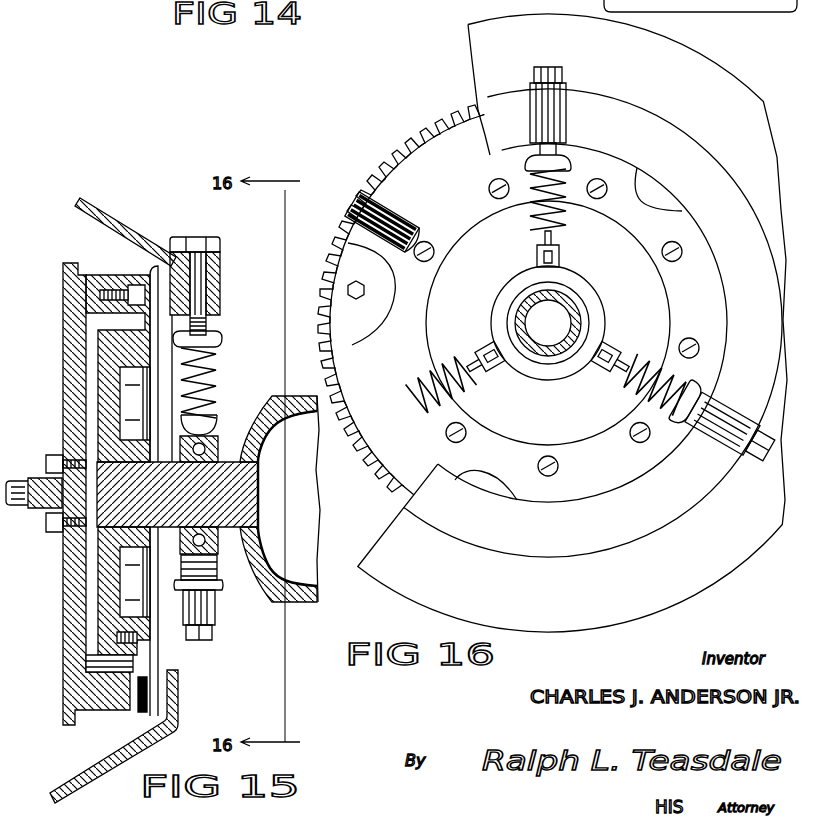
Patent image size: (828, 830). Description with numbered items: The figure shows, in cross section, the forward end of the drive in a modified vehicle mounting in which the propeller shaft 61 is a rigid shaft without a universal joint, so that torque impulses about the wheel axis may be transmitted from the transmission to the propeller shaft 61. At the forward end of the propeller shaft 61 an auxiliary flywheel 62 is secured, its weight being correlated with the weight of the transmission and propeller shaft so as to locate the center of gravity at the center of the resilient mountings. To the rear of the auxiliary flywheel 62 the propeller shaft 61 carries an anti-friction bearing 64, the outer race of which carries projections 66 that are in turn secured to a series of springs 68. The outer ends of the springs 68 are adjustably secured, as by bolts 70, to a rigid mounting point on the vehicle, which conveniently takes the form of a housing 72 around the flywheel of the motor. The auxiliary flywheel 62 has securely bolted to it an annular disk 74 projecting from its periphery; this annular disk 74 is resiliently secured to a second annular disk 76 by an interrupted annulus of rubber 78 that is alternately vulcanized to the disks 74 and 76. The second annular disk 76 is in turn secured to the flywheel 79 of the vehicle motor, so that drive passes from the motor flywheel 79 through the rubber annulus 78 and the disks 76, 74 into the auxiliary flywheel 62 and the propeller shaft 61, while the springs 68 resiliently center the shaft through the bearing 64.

In FIG. 15, the propeller shaft 61 is at (305, 497).
In FIG. 16, the propeller shaft 61 is at (575, 311).
In FIG. 15, the auxiliary flywheel 62 is at (105, 345).
In FIG. 15, the anti-friction bearing 64 is at (218, 438).
In FIG. 16, the anti-friction bearing 64 is at (566, 372).
In FIG. 15, the projections 66 is at (216, 414).
In FIG. 16, the projections 66 is at (493, 368).
In FIG. 15, the springs 68 is at (216, 380).
In FIG. 16, the springs 68 is at (444, 370).
In FIG. 15, the bolts 70 is at (220, 244).
In FIG. 16, the bolts 70 is at (566, 80).
In FIG. 15, the housing 72 is at (100, 208).
In FIG. 16, the housing 72 is at (478, 51).
In FIG. 15, the annular disk 74 is at (152, 276).
In FIG. 16, the annular disk 74 is at (345, 341).
In FIG. 15, the second annular disk 76 is at (137, 713).
In FIG. 15, the interrupted annulus of rubber 78 is at (146, 715).
In FIG. 16, the interrupted annulus of rubber 78 is at (360, 213).
In FIG. 15, the flywheel of the vehicle motor 79 is at (63, 686).
In FIG. 16, the flywheel of the vehicle motor 79 is at (341, 265).